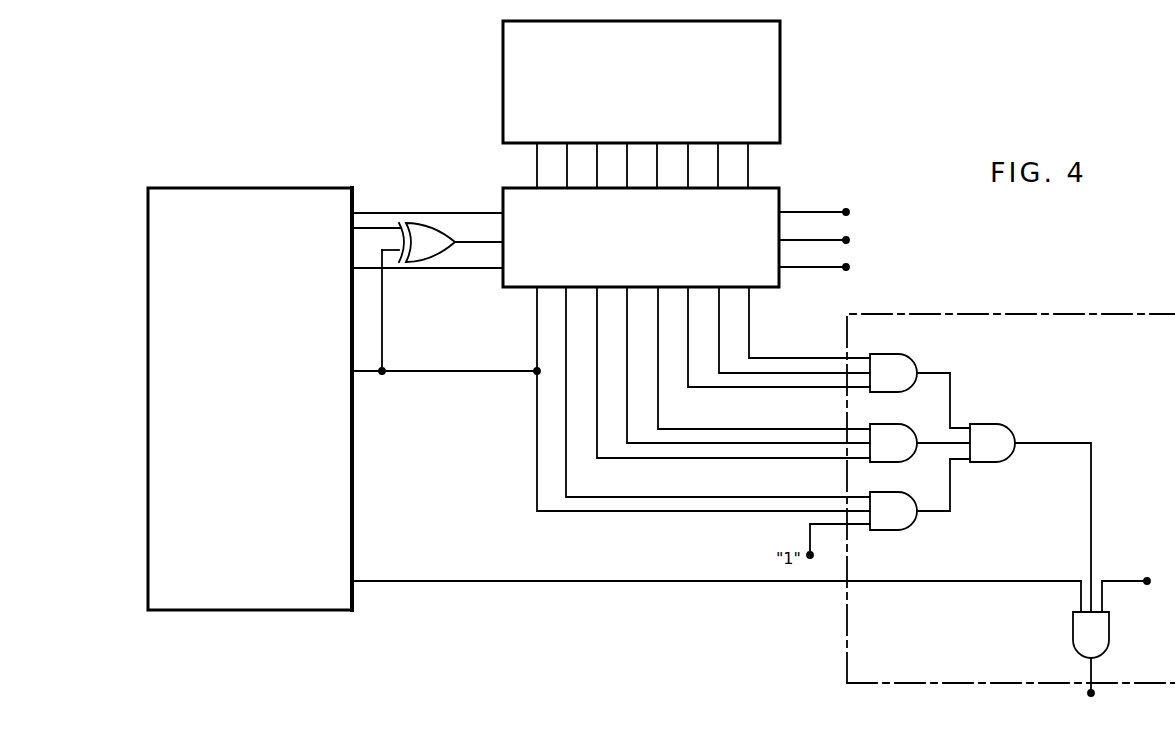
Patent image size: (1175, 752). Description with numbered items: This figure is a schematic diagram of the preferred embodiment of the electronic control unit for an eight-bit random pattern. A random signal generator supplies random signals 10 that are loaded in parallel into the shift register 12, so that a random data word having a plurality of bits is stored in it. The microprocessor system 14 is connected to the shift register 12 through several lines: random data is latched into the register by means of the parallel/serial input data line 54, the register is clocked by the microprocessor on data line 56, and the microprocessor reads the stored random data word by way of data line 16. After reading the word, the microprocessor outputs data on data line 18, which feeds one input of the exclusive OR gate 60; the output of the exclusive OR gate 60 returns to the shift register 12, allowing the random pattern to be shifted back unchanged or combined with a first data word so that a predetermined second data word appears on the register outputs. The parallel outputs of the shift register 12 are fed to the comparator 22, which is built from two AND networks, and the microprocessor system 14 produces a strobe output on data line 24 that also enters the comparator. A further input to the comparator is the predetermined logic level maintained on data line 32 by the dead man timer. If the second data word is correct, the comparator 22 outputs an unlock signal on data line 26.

The random signals 10 is at (780, 96).
The shift register 12 is at (781, 288).
The microprocessor system 14 is at (300, 611).
The data line 16 is at (437, 372).
The data line 18 is at (367, 229).
The comparator 22 is at (1120, 314).
The data line 24 is at (521, 582).
The data line 26 is at (1087, 692).
The data line 32 is at (1123, 580).
The parallel/serial input data line 54 is at (458, 212).
The data line 56 is at (437, 270).
The exclusive OR gate 60 is at (457, 248).